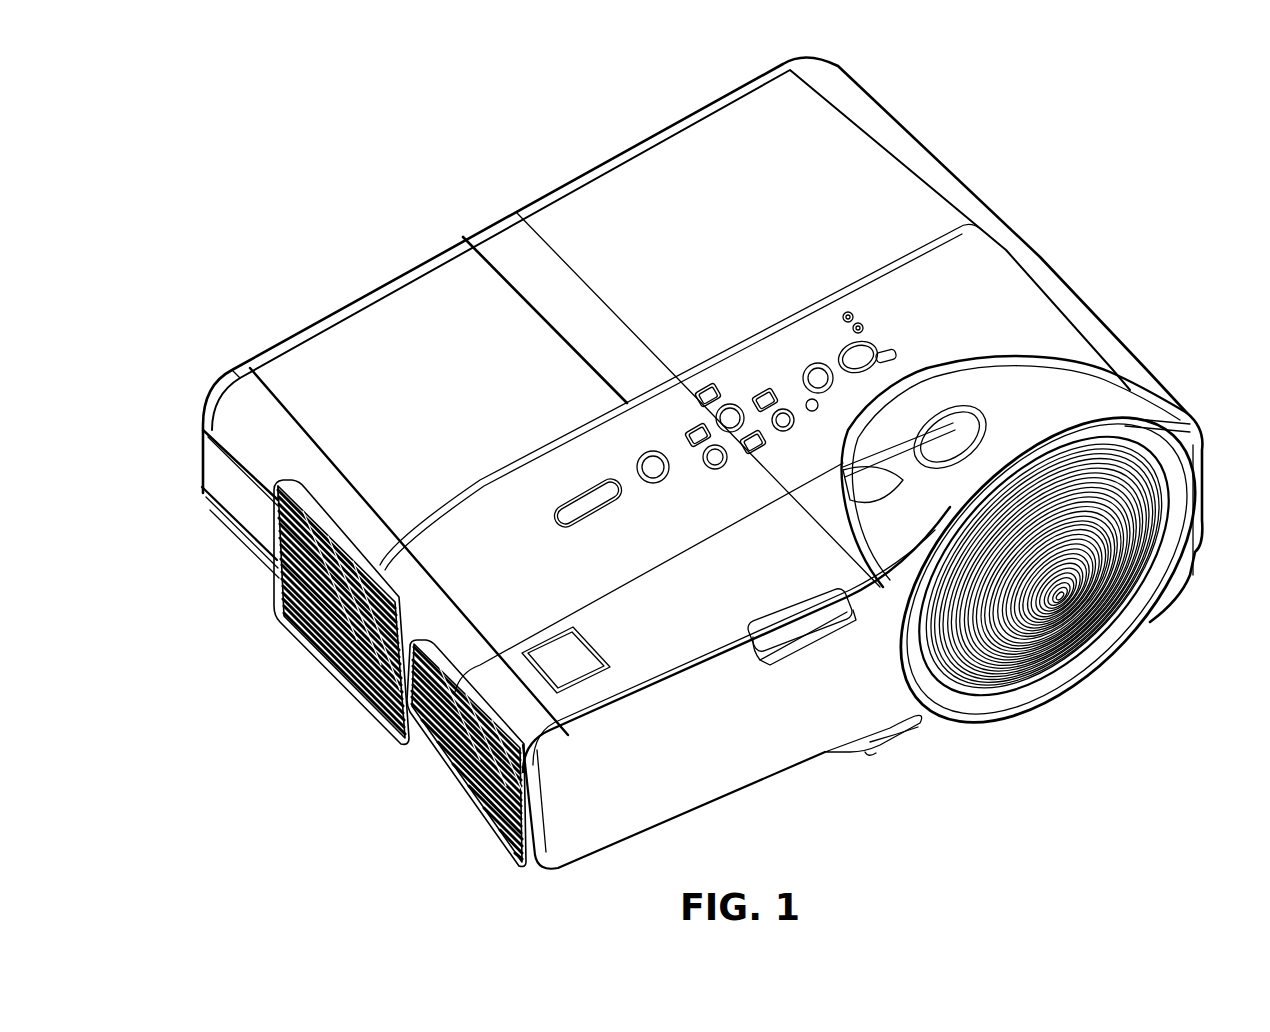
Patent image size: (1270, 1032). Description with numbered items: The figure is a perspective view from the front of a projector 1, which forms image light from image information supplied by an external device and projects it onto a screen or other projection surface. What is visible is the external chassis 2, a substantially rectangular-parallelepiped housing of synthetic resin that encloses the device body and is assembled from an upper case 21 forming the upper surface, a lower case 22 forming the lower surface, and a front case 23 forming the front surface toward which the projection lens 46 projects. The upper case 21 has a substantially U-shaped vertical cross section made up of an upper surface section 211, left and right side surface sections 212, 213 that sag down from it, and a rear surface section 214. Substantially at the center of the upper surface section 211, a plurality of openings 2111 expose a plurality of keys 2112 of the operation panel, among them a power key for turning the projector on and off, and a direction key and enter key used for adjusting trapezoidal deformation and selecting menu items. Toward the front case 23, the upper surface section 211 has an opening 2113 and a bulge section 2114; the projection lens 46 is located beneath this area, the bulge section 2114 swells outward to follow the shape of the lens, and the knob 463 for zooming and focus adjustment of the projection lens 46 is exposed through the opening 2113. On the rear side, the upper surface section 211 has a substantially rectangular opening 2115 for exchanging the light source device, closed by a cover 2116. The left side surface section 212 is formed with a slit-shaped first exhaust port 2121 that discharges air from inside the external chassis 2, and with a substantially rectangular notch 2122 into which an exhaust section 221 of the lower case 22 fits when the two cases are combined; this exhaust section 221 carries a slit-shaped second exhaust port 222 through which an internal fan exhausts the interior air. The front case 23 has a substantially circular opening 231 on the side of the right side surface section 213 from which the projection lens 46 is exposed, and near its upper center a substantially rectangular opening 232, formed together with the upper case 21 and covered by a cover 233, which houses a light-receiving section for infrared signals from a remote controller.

The projector 1 is at (1185, 118).
The external chassis 2 is at (866, 108).
The upper case 21 is at (637, 170).
The lower case 22 is at (223, 533).
The front case 23 is at (606, 831).
The upper surface section 211 is at (410, 293).
The left side surface section 212 is at (205, 470).
The right side surface section 213 is at (1016, 222).
The rear surface section 214 is at (487, 215).
The exhaust section 221 is at (310, 640).
The second exhaust port 222 is at (350, 695).
The opening 231 is at (955, 728).
The opening 232 is at (795, 665).
The cover 233 is at (800, 608).
The projection lens 46 is at (1050, 653).
The knob 463 is at (945, 442).
The openings 2111 is at (870, 352).
The keys 2112 is at (838, 350).
The opening 2113 is at (930, 400).
The bulge section 2114 is at (1085, 398).
The opening 2115 is at (560, 328).
The cover 2116 is at (287, 365).
The first exhaust port 2121 is at (468, 800).
The notch 2122 is at (330, 505).